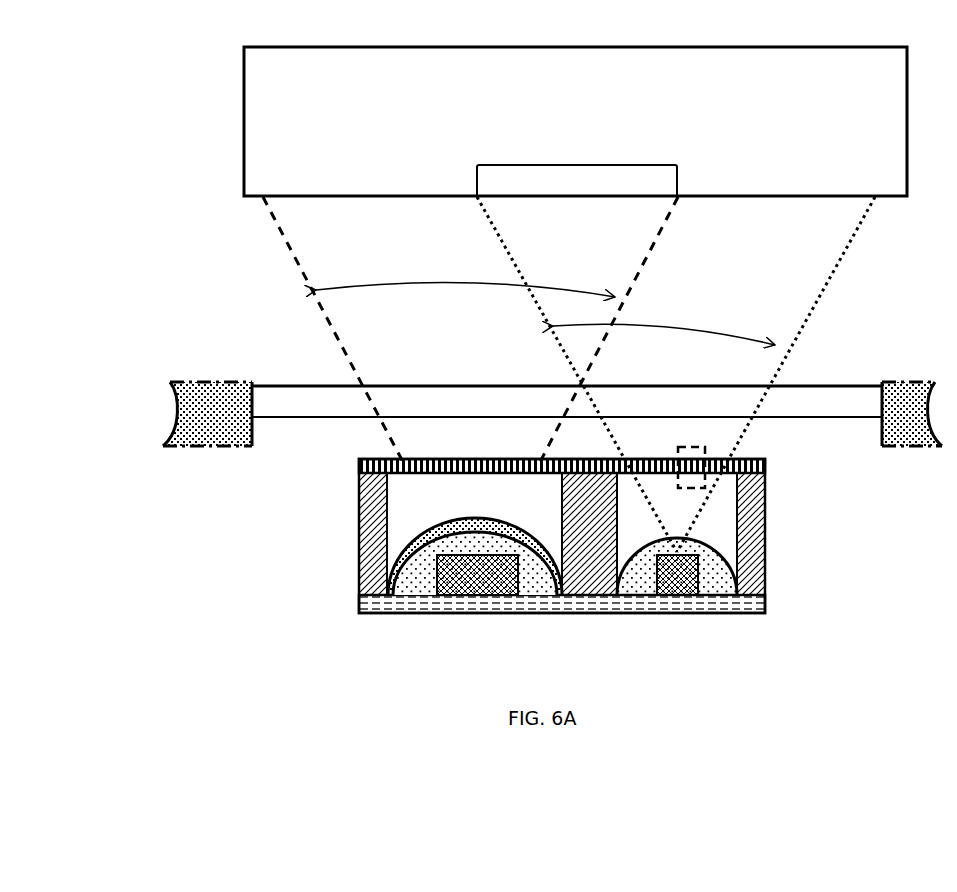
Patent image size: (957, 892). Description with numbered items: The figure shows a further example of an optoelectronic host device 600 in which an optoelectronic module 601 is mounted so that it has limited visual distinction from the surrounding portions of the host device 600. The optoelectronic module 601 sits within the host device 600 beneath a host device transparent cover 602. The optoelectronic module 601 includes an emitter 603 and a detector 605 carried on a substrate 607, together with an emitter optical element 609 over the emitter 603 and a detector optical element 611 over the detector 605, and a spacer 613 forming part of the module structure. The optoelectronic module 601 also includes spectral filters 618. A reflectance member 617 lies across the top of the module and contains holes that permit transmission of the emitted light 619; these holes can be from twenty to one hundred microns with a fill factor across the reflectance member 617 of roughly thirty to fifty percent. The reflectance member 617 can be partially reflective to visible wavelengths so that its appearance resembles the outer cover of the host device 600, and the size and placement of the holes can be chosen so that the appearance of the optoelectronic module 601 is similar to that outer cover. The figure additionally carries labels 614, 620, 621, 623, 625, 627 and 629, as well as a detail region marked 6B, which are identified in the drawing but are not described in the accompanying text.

The host device 600 is at (169, 360).
The optoelectronic module 601 is at (300, 662).
The host device transparent cover 602 is at (300, 403).
The emitter 603 is at (682, 583).
The detector 605 is at (455, 580).
The substrate 607 is at (359, 608).
The emitter optical element 609 is at (710, 555).
The detector optical element 611 is at (403, 583).
The spacer 613 is at (755, 518).
The divider wall 614 is at (577, 573).
The reflectance member 617 is at (357, 468).
The spectral filters 618 is at (427, 530).
The emitted light 619 is at (825, 293).
The support 620 is at (197, 435).
The second beam angle 621 is at (672, 326).
The target region 623 is at (350, 99).
The first illumination area 625 is at (371, 190).
The first beam angle 627 is at (370, 282).
The second illumination area 629 is at (515, 165).
The detail view reference 6B is at (705, 450).